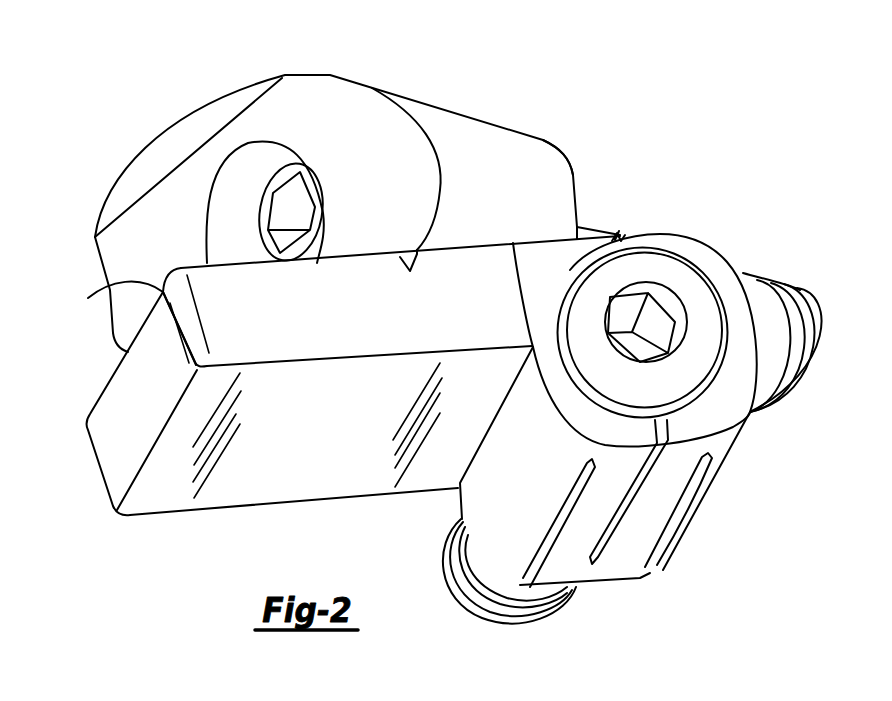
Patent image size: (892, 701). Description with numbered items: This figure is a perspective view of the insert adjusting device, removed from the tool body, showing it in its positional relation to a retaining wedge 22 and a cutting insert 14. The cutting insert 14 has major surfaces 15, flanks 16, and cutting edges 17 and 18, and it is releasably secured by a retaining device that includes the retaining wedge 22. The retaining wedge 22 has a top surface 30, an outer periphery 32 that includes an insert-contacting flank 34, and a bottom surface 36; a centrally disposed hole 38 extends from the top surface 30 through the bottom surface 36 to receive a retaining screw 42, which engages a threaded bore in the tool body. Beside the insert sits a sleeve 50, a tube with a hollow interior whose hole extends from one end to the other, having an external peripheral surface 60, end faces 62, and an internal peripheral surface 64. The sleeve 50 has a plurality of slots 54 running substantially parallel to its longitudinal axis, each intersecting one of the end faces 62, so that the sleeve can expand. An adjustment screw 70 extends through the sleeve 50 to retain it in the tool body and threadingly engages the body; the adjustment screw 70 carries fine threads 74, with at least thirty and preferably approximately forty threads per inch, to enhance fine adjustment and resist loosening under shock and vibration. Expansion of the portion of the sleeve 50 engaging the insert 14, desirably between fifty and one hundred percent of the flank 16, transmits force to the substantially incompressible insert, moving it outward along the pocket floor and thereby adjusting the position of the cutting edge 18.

The cutting insert 14 is at (120, 432).
The major surfaces 15 is at (297, 440).
The flanks 16 is at (317, 322).
The cutting edge 17 is at (205, 262).
The cutting edge 18 is at (105, 297).
The retaining wedge 22 is at (213, 133).
The top surface 30 is at (372, 198).
The outer periphery 32 is at (507, 223).
The insert-contacting flank 34 is at (419, 213).
The bottom surface 36 is at (573, 168).
The hole 38 is at (238, 158).
The retaining screw 42 is at (285, 168).
The sleeve 50 is at (718, 250).
The slots 54 is at (622, 237).
The external peripheral surface 60 is at (497, 533).
The end faces 62 is at (722, 410).
The internal peripheral surface 64 is at (603, 368).
The adjustment screw 70 is at (700, 293).
The fine threads 74 is at (540, 606).